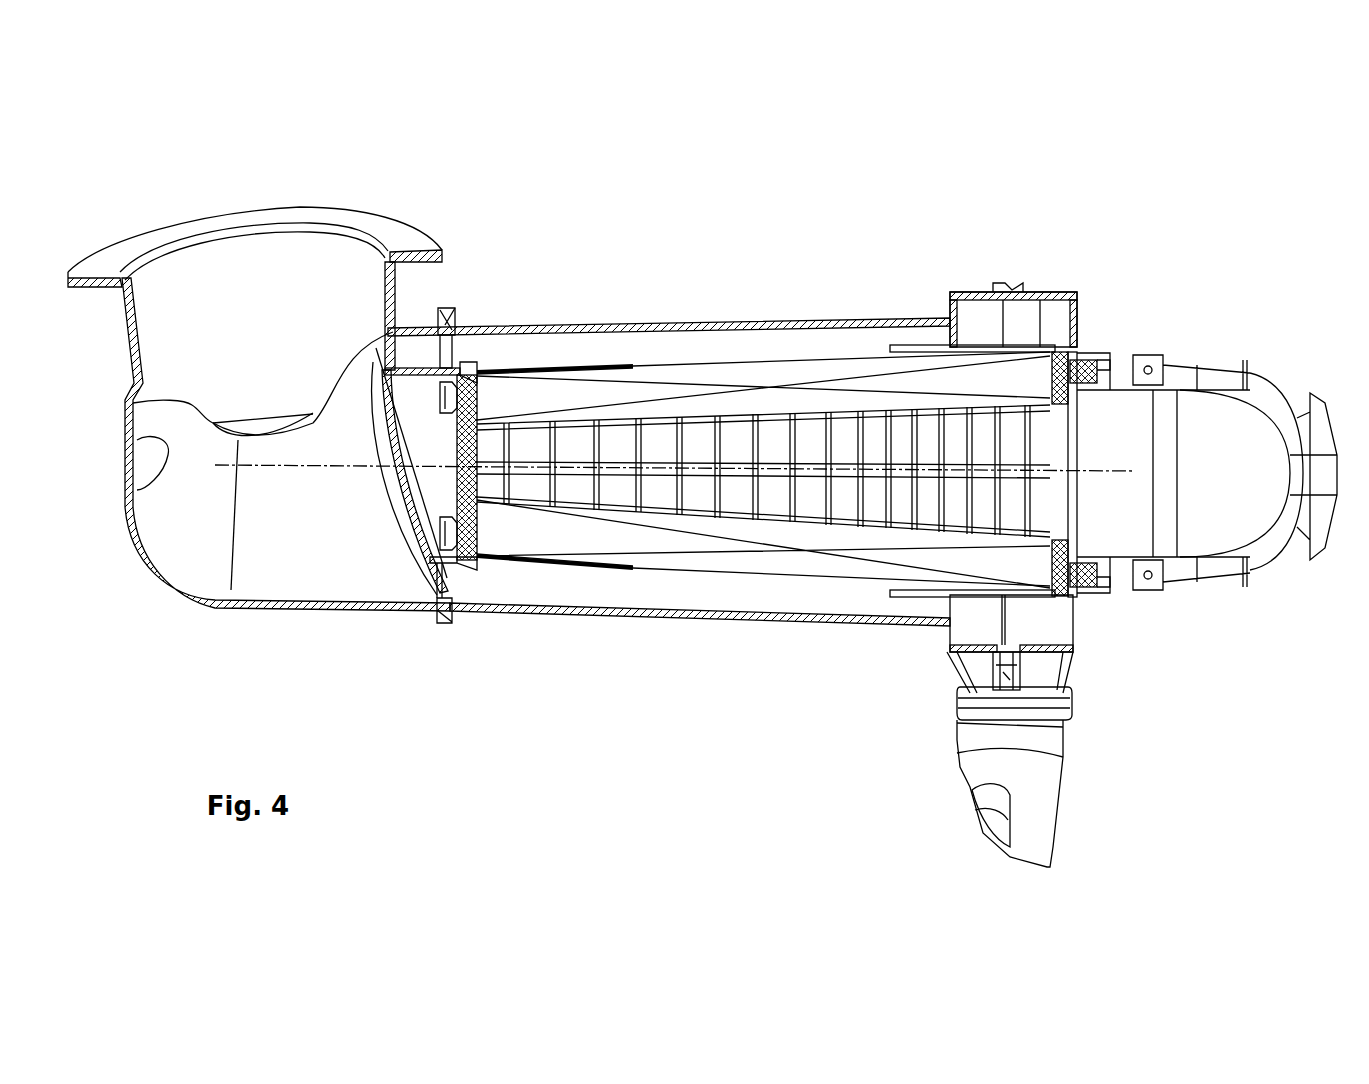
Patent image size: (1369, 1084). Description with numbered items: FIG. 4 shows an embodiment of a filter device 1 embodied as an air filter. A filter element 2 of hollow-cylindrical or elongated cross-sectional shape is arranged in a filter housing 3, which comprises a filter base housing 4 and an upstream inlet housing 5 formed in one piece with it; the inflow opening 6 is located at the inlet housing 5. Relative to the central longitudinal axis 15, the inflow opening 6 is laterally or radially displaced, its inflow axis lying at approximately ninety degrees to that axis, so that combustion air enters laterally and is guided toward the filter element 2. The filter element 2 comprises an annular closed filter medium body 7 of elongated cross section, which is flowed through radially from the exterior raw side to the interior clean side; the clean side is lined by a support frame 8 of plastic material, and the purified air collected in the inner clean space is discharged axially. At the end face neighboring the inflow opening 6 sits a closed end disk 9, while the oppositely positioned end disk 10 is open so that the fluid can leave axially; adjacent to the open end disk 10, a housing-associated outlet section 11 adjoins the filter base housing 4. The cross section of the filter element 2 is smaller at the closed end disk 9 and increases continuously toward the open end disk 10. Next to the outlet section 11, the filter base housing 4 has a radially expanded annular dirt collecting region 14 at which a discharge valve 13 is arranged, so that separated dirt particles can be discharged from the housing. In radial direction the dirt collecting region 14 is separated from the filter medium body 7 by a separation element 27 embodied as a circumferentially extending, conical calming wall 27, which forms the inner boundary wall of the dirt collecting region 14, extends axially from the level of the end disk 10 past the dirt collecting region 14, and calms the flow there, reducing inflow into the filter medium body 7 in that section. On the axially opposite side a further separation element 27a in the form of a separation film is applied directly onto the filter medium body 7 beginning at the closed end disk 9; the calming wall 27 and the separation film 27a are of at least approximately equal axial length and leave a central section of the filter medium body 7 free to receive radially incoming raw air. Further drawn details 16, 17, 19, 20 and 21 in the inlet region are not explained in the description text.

The filter device 1 is at (672, 178).
The filter element 2 is at (562, 364).
The filter housing 3 is at (624, 321).
The filter base housing 4 is at (697, 325).
The inlet housing 5 is at (128, 335).
The inflow opening 6 is at (310, 252).
The filter medium body 7 is at (680, 556).
The support frame 8 is at (733, 472).
The end disk 9 is at (448, 580).
The end disk 10 is at (1048, 376).
The outlet section 11 is at (1270, 563).
The discharge valve 13 is at (1048, 780).
The dirt collecting region 14 is at (1043, 647).
The central longitudinal axis 15 is at (348, 462).
The partition wall 16 is at (372, 407).
The clip 17 is at (438, 406).
The inlet opening 19 is at (142, 430).
The connection flange 20 is at (430, 350).
The screw 21 is at (447, 350).
The calming wall 27 is at (903, 598).
The separation film 27a is at (620, 570).